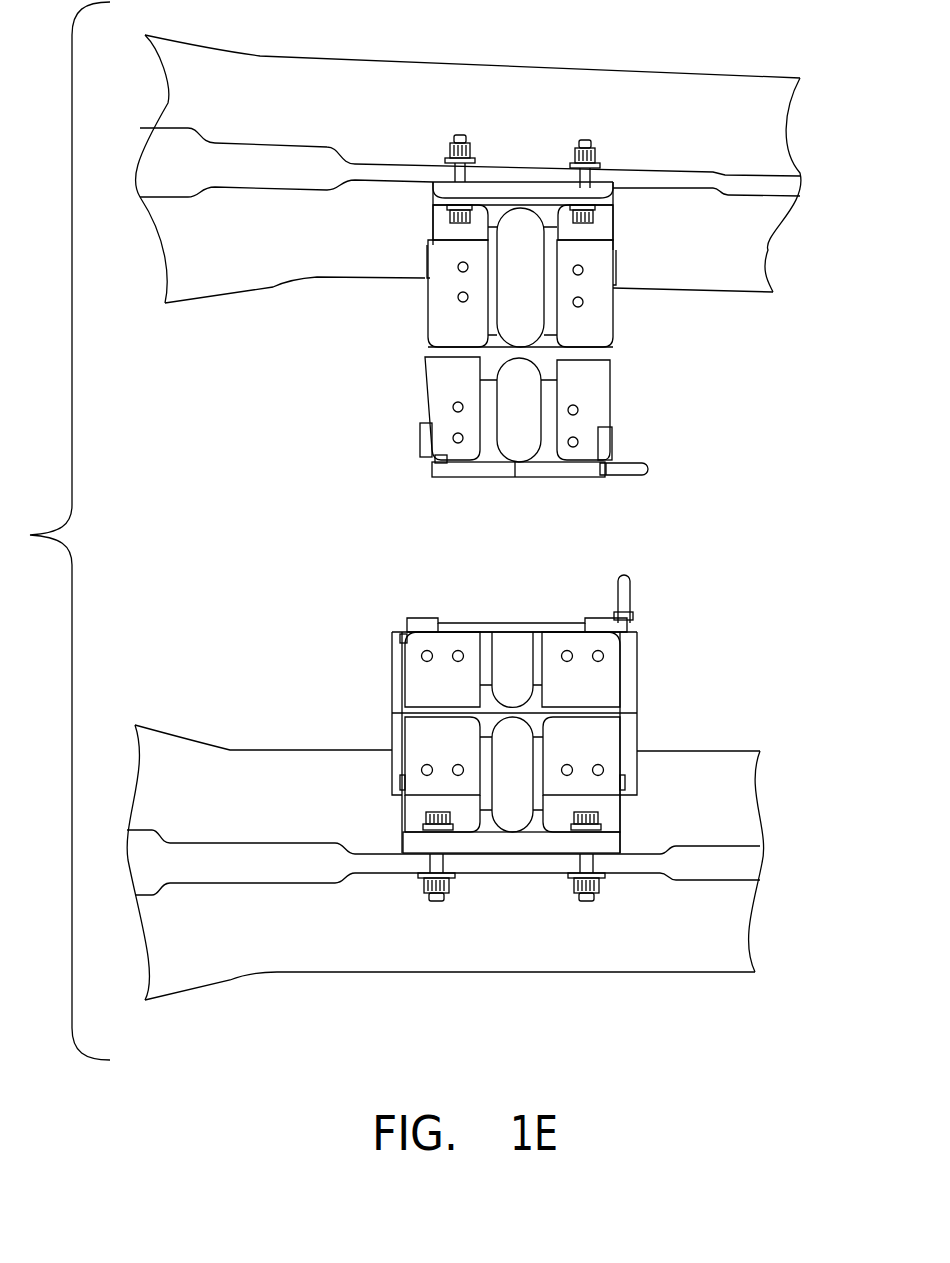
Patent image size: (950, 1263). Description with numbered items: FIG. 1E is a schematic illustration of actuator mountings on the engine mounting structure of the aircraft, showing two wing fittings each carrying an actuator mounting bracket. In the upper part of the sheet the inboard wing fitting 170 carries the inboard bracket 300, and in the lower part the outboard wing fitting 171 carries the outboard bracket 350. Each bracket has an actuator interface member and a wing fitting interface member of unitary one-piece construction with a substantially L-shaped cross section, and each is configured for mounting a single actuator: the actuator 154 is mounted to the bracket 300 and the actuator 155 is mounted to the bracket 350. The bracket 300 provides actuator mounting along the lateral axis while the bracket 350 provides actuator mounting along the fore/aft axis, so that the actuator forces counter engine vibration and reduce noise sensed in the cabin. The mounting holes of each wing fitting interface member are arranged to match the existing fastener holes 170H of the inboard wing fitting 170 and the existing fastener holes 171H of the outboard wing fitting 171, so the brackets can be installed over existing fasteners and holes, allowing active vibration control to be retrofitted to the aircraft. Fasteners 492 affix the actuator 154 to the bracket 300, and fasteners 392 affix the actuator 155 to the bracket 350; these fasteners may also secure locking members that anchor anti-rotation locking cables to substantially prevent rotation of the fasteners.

The inboard wing fitting 170 is at (268, 294).
The existing fastener holes 170H is at (596, 175).
The inboard bracket 300 is at (420, 403).
The fasteners 492 is at (583, 275).
The actuator 154 is at (446, 473).
The actuator 155 is at (449, 616).
The outboard bracket 350 is at (401, 671).
The fasteners 392 is at (603, 655).
The outboard wing fitting 171 is at (316, 748).
The existing fastener holes 171H is at (432, 857).